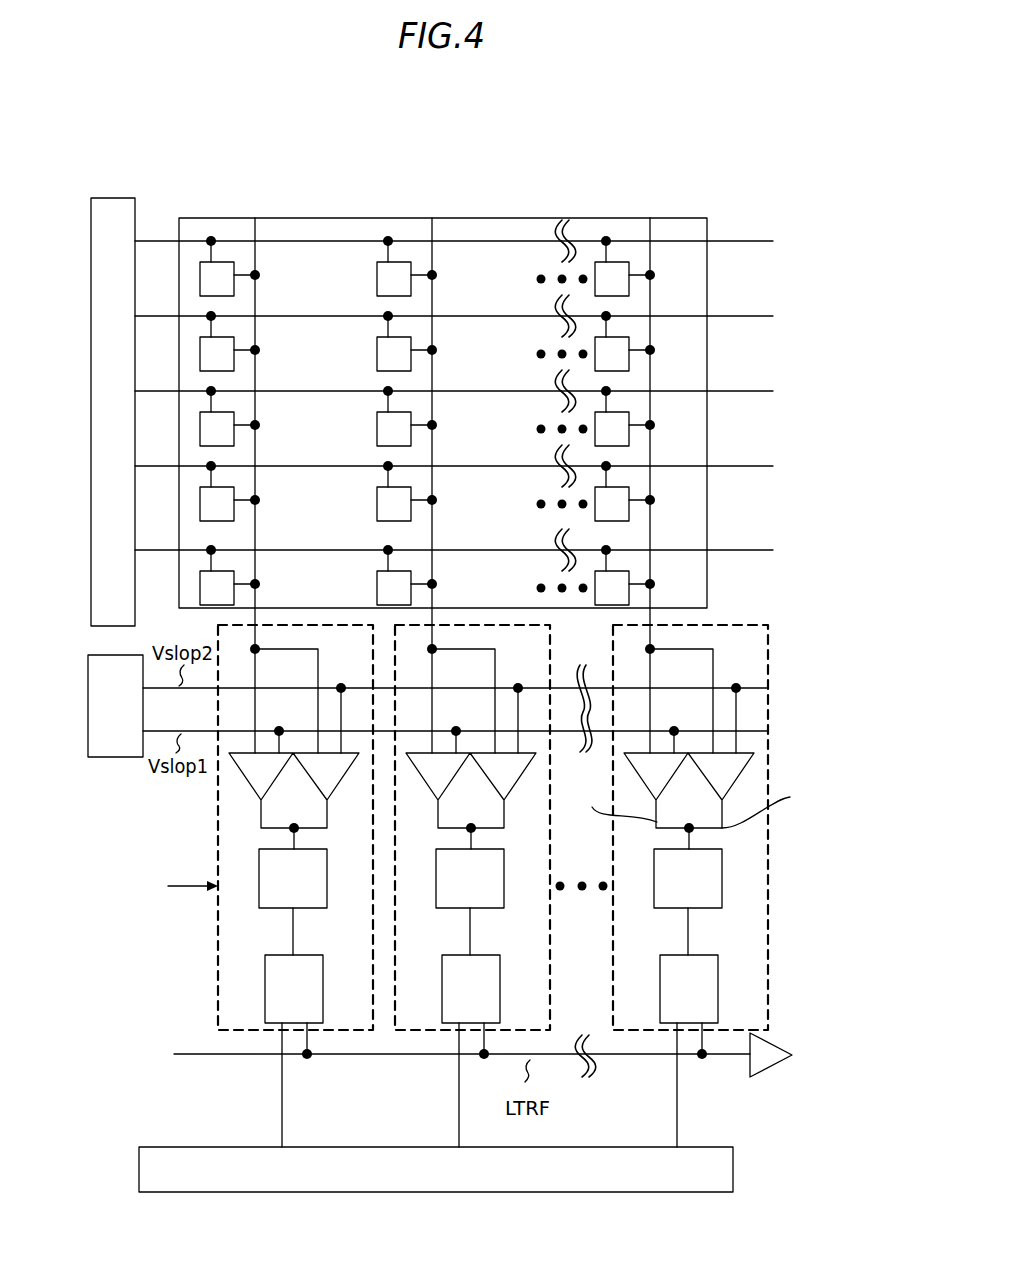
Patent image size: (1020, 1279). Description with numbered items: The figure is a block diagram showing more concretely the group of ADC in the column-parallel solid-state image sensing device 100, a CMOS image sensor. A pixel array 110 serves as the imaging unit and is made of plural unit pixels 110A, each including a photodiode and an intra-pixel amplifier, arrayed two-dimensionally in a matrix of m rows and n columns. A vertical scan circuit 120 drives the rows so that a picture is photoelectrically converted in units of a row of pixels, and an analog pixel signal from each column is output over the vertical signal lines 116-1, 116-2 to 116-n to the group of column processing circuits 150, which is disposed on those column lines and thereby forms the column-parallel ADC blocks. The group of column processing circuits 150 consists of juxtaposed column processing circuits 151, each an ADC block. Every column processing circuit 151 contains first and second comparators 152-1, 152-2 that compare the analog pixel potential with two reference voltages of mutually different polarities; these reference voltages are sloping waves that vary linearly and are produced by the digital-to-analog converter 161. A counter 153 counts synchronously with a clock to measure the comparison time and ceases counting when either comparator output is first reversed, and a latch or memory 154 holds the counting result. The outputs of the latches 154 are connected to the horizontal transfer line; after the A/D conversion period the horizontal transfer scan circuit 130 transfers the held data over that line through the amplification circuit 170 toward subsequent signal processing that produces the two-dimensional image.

The solid-state image sensing device 100 is at (600, 131).
The pixel array 110 is at (454, 380).
The unit pixel 110A is at (224, 262).
The vertical signal line 116-1 is at (258, 620).
The vertical signal line 116-2 is at (436, 612).
The vertical signal line 116-n is at (655, 617).
The vertical scan circuit 120 is at (110, 197).
The horizontal transfer scan circuit 130 is at (720, 1168).
The group of column processing circuits 150 is at (216, 790).
The column processing circuit 151 is at (216, 940).
The first comparator 152-1 is at (678, 752).
The second comparator 152-2 is at (745, 753).
The counter 153 is at (712, 849).
The latch (memory) 154 is at (712, 955).
The DAC 161 is at (88, 668).
The amplification circuit 170 is at (762, 1042).